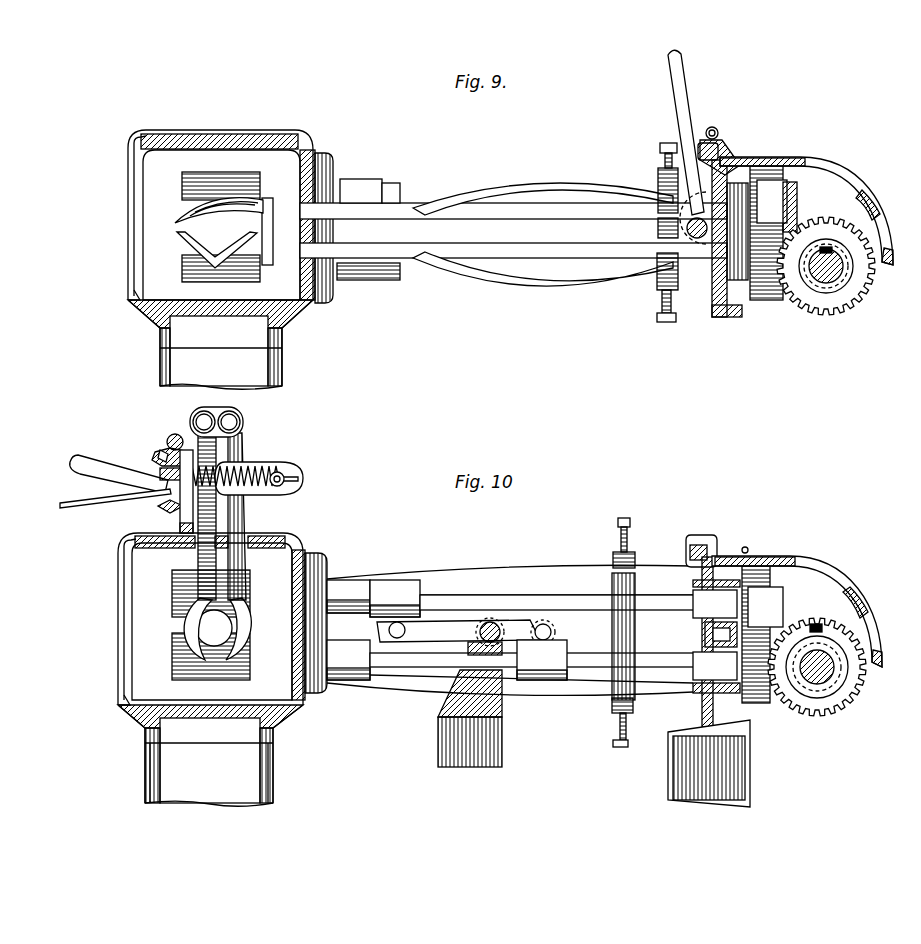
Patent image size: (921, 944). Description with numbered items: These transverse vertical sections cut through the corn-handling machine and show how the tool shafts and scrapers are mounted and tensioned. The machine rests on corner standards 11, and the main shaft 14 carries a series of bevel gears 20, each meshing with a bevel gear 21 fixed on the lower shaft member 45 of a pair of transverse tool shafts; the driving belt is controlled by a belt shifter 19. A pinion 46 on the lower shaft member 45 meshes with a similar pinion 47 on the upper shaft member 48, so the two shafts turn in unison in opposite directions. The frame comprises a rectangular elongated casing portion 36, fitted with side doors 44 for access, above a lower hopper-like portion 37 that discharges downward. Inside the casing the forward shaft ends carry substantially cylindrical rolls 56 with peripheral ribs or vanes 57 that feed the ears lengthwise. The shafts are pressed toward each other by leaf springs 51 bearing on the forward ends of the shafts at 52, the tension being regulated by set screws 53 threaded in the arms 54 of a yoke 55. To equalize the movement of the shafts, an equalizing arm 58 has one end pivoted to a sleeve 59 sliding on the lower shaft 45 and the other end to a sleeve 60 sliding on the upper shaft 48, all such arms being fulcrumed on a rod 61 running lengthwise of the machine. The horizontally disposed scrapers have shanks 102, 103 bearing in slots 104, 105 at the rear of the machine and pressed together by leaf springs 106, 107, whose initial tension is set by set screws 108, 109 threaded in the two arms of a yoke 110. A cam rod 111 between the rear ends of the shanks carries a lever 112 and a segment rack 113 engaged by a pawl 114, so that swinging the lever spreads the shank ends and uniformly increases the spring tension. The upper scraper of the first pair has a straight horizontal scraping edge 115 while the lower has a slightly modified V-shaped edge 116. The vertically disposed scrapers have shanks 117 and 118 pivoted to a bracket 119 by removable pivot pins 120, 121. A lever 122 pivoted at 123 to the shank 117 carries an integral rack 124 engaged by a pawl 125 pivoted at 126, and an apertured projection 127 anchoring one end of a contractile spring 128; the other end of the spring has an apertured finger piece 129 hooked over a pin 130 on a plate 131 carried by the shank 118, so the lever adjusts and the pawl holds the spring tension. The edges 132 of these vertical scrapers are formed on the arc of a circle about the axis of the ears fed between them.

In FIG. 10, the corner standards 11 is at (750, 790).
In FIG. 9, the main shaft 14 is at (832, 280).
In FIG. 10, the main shaft 14 is at (822, 690).
In FIG. 9, the belt shifter 19 is at (720, 150).
In FIG. 10, the belt shifter 19 is at (700, 544).
In FIG. 9, the bevel gear 20 is at (868, 290).
In FIG. 10, the bevel gear 20 is at (838, 706).
In FIG. 9, the bevel gear 21 is at (818, 244).
In FIG. 10, the bevel gear 21 is at (790, 698).
In FIG. 9, the rectangular elongated casing portion 36 is at (278, 134).
In FIG. 10, the lower hopper-like portion 37 is at (273, 770).
In FIG. 9, the side doors 44 is at (128, 214).
In FIG. 10, the side doors 44 is at (118, 612).
In FIG. 9, the lower shaft member 45 is at (718, 318).
In FIG. 10, the lower shaft member 45 is at (588, 668).
In FIG. 9, the pinion 46 is at (775, 302).
In FIG. 10, the pinion 46 is at (460, 593).
In FIG. 9, the pinion 47 is at (808, 165).
In FIG. 10, the pinion 47 is at (778, 566).
In FIG. 9, the upper shaft member 48 is at (658, 186).
In FIG. 10, the leaf springs 51 is at (531, 568).
In FIG. 10, the forward shaft ends 52 is at (338, 578).
In FIG. 10, the set screws 53 is at (624, 516).
In FIG. 10, the yoke arms 54 is at (612, 558).
In FIG. 10, the yoke 55 is at (636, 630).
In FIG. 9, the cylindrical rolls 56 is at (265, 196).
In FIG. 9, the peripheral ribs or vanes 57 is at (205, 176).
In FIG. 10, the peripheral ribs or vanes 57 is at (242, 580).
In FIG. 10, the equalizing arm 58 is at (458, 637).
In FIG. 10, the sleeve 59 is at (542, 650).
In FIG. 10, the sleeve 60 is at (400, 580).
In FIG. 10, the fulcrum rod 61 is at (492, 620).
In FIG. 9, the scraper shank 102 is at (575, 207).
In FIG. 9, the scraper shank 103 is at (540, 255).
In FIG. 9, the slot 104 is at (790, 180).
In FIG. 9, the slot 105 is at (740, 282).
In FIG. 9, the leaf spring 106 is at (581, 178).
In FIG. 9, the leaf spring 107 is at (577, 283).
In FIG. 9, the set screw 108 is at (662, 142).
In FIG. 9, the set screw 109 is at (660, 305).
In FIG. 9, the yoke 110 is at (658, 230).
In FIG. 9, the cam rod 111 is at (693, 250).
In FIG. 9, the lever 112 is at (667, 70).
In FIG. 9, the segment rack 113 is at (723, 138).
In FIG. 9, the pawl 114 is at (696, 120).
In FIG. 9, the straight scraping edge 115 is at (178, 226).
In FIG. 9, the V-shaped scraping edge 116 is at (182, 244).
In FIG. 10, the vertical scraper shank 117 is at (180, 528).
In FIG. 10, the vertical scraper shank 118 is at (218, 448).
In FIG. 10, the bracket 119 is at (246, 512).
In FIG. 10, the removable pivot pin 120 is at (193, 420).
In FIG. 10, the removable pivot pin 121 is at (240, 420).
In FIG. 10, the lever 122 is at (68, 463).
In FIG. 10, the lever pivot 123 is at (162, 508).
In FIG. 10, the rack 124 is at (157, 456).
In FIG. 10, the pawl 125 is at (158, 452).
In FIG. 10, the pawl pivot 126 is at (170, 436).
In FIG. 10, the apertured projection 127 is at (160, 472).
In FIG. 10, the contractile spring 128 is at (130, 495).
In FIG. 10, the apertured finger piece 129 is at (282, 468).
In FIG. 10, the pin 130 is at (286, 479).
In FIG. 10, the plate 131 is at (290, 484).
In FIG. 10, the scraper edges 132 is at (198, 630).